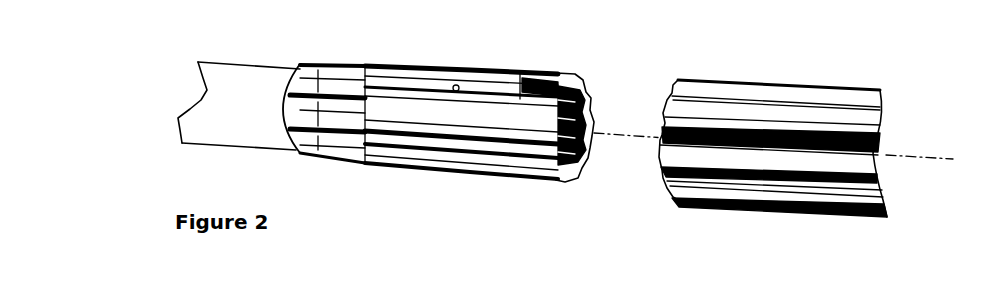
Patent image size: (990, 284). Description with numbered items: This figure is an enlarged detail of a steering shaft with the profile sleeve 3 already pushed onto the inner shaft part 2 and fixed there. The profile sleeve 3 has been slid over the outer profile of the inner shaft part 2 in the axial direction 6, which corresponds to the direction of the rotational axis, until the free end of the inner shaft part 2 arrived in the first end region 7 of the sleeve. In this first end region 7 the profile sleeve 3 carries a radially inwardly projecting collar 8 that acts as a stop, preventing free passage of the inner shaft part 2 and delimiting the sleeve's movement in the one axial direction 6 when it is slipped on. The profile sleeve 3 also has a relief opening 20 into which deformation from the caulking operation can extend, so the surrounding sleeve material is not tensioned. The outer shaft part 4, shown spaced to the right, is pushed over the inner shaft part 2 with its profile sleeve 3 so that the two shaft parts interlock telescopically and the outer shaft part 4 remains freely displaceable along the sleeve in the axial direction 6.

The inner shaft part 2 is at (247, 88).
The profile sleeve 3 is at (428, 78).
The relief opening 20 is at (527, 90).
The radially inwardly projecting collar 8 is at (587, 86).
The first end region 7 is at (571, 181).
The outer shaft part 4 is at (745, 110).
The axial direction 6 is at (943, 158).